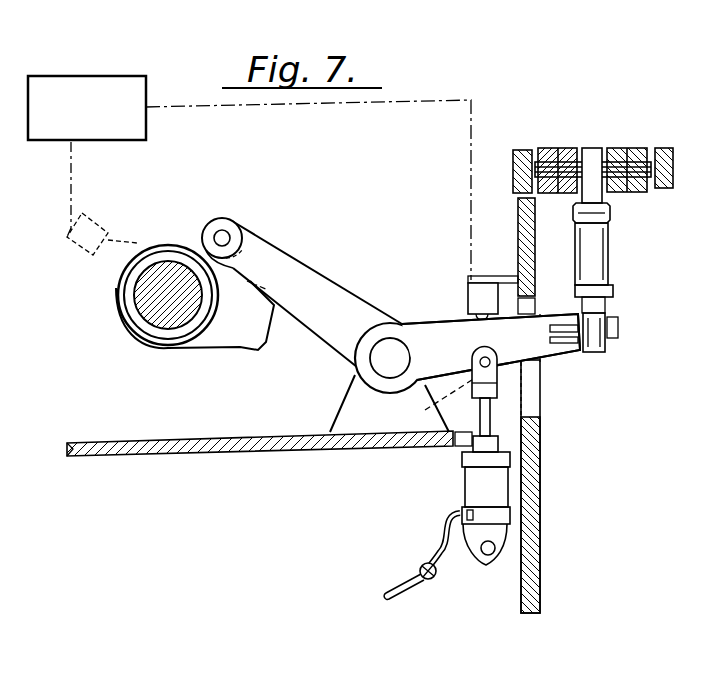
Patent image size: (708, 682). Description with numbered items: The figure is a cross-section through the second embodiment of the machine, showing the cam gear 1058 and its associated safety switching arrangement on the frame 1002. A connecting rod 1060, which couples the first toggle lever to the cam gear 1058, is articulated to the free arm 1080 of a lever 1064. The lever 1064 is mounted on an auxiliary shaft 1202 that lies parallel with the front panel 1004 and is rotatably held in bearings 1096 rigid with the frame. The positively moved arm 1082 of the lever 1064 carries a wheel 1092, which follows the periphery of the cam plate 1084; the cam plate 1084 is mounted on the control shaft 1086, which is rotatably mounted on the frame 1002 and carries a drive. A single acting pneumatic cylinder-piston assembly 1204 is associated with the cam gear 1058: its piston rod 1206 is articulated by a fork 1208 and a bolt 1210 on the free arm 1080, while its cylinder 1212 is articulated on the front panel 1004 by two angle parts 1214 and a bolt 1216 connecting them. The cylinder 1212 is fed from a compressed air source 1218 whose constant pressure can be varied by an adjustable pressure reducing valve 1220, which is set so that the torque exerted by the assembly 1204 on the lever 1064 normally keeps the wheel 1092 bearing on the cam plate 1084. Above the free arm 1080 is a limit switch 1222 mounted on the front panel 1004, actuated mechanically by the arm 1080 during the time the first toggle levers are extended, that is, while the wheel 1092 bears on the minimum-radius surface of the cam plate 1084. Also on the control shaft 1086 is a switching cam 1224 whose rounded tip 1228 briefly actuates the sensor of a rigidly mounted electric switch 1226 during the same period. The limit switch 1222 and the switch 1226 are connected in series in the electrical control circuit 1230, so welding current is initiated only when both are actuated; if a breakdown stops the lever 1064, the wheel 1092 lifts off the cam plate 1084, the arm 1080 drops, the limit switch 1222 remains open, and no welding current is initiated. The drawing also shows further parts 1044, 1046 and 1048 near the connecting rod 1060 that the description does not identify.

The frame 1002 is at (548, 593).
The front panel 1004 is at (530, 463).
The lock nut 1044 is at (635, 148).
The lock nut 1046 is at (570, 148).
The support bracket 1048 is at (513, 170).
The cam gear 1058 is at (380, 297).
The connecting rod 1060 is at (620, 248).
The lever 1064 is at (508, 376).
The free arm 1080 is at (445, 335).
The positively moved arm 1082 is at (277, 258).
The cam plate 1084 is at (268, 340).
The control shaft 1086 is at (163, 303).
The wheel 1092 is at (223, 218).
The bearing 1096 is at (378, 390).
The auxiliary shaft 1202 is at (385, 350).
The single acting pneumatic cylinder-piston assembly 1204 is at (523, 487).
The piston rod 1206 is at (490, 418).
The fork 1208 is at (430, 403).
The bolt 1210 is at (492, 360).
The cylinder 1212 is at (470, 483).
The angle parts 1214 is at (510, 558).
The bolt 1216 is at (487, 556).
The compressed air source 1218 is at (423, 590).
The pressure reducing valve 1220 is at (430, 563).
The limit switch 1222 is at (472, 285).
The switching cam 1224 is at (127, 243).
The electric switch 1226 is at (88, 213).
The rounded tip 1228 is at (100, 262).
The electrical control circuit 1230 is at (134, 75).